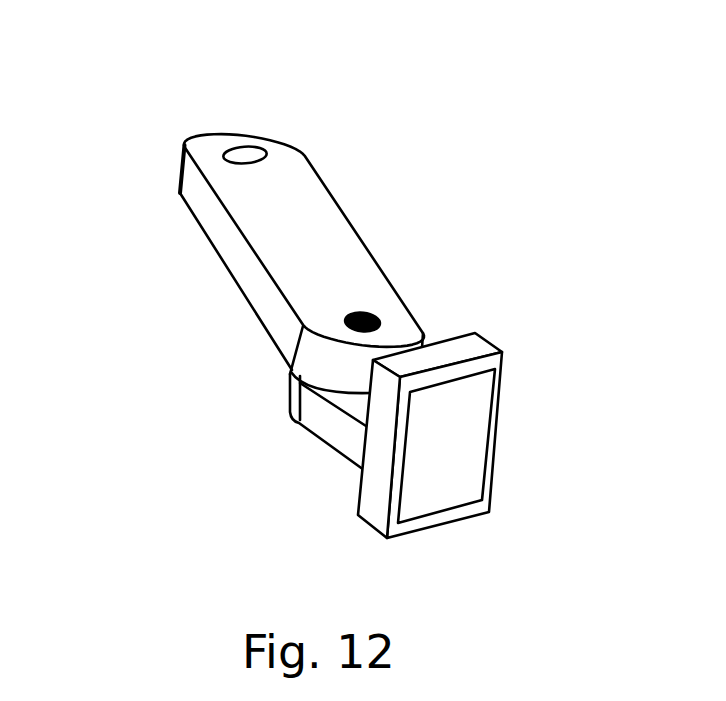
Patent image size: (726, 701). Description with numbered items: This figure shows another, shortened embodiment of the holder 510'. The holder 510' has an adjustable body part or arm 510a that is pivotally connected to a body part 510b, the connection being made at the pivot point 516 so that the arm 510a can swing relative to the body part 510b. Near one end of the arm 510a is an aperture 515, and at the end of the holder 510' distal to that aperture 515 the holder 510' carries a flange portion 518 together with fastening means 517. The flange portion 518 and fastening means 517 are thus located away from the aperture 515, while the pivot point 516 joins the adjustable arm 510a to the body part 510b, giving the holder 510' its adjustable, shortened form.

The holder 510' is at (336, 290).
The adjustable body part or arm 510a is at (235, 253).
The body part 510b is at (322, 420).
The aperture 515 is at (248, 155).
The pivot point 516 is at (372, 315).
The fastening means 517 is at (443, 477).
The flange portion 518 is at (462, 349).